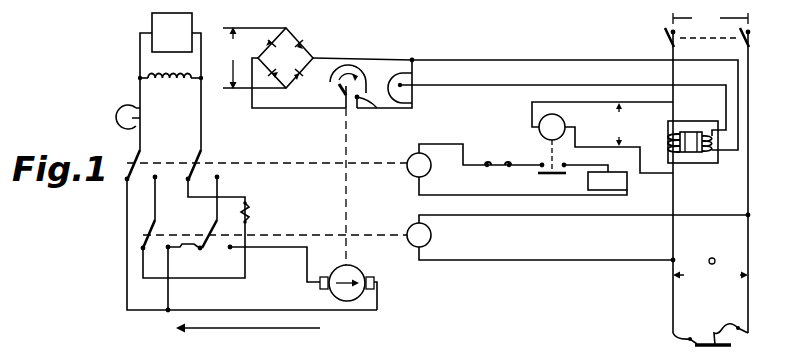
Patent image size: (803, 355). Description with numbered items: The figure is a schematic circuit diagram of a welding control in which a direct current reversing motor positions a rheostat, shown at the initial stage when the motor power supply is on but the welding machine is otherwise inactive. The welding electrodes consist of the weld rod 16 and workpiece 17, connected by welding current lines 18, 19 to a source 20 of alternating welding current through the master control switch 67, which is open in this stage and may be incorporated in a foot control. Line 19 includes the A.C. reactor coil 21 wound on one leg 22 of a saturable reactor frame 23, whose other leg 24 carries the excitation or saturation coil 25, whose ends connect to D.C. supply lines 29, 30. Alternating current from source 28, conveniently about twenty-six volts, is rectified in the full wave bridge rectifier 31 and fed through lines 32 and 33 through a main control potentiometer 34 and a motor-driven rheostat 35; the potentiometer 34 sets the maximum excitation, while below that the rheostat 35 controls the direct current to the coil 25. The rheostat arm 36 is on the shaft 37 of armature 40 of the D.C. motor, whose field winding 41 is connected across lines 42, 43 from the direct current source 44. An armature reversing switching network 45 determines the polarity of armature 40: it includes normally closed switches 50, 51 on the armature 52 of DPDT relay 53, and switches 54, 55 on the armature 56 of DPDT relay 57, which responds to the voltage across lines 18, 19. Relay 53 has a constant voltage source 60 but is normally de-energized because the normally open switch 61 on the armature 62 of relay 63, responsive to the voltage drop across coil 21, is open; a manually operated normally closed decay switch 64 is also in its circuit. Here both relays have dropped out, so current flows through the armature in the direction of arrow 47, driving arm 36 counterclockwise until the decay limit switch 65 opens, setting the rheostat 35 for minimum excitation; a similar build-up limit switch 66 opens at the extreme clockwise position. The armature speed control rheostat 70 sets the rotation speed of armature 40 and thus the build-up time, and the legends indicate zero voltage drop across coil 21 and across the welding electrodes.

The weld rod 16 is at (719, 329).
The workpiece 17 is at (702, 344).
The welding current line 18 is at (749, 305).
The welding current line 19 is at (673, 299).
The source of A.C. welding current 20 is at (710, 20).
The A.C. reactor coil 21 is at (668, 142).
The leg of saturable reactor frame 22 is at (676, 164).
The saturable reactor frame 23 is at (692, 121).
The leg of saturable reactor frame 24 is at (712, 164).
The saturation coil 25 is at (722, 165).
The alternating current source 28 is at (222, 70).
The D.C. supply line 29 is at (567, 60).
The D.C. supply line 30 is at (571, 85).
The full wave bridge rectifier 31 is at (293, 40).
The line 32 is at (323, 58).
The line 33 is at (282, 110).
The main control potentiometer 34 is at (412, 101).
The motor-driven rheostat 35 is at (380, 108).
The rheostat arm 36 is at (341, 87).
The shaft 37 is at (345, 141).
The armature 40 is at (357, 268).
The field winding 41 is at (178, 83).
The line 42 is at (140, 61).
The line 43 is at (201, 61).
The source of direct current 44 is at (157, 23).
The armature reversing switching network 45 is at (118, 216).
The arrow 47 is at (289, 328).
The normally closed switch 50 is at (133, 163).
The normally closed switch 51 is at (196, 163).
The relay armature 52 is at (305, 166).
The DPDT relay 53 is at (408, 172).
The switch 54 is at (155, 230).
The switch 55 is at (214, 228).
The relay armature 56 is at (330, 235).
The DPDT relay 57 is at (407, 233).
The constant voltage supply source 60 is at (618, 184).
The normally open switch 61 is at (539, 174).
The relay armature 62 is at (552, 149).
The relay 63 is at (539, 130).
The decay switch 64 is at (496, 172).
The decay limit switch 65 is at (250, 210).
The build-up limit switch 66 is at (188, 251).
The master control switch 67 is at (688, 38).
The armature speed control rheostat 70 is at (117, 121).